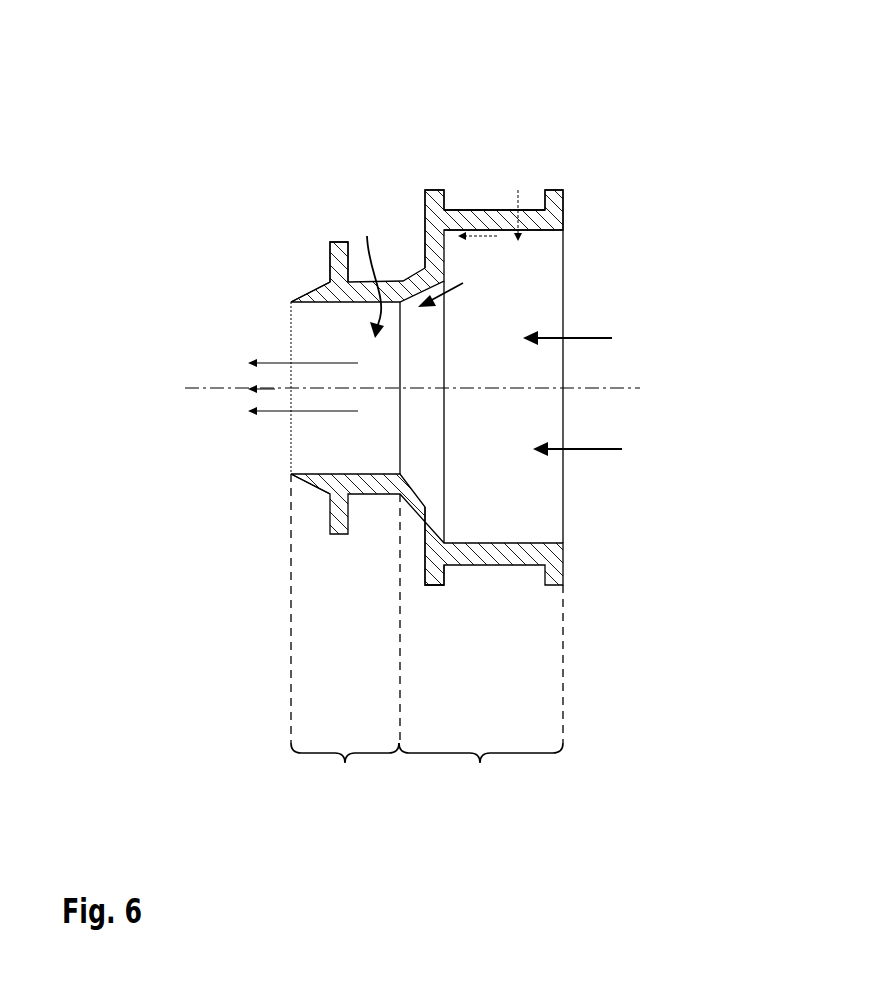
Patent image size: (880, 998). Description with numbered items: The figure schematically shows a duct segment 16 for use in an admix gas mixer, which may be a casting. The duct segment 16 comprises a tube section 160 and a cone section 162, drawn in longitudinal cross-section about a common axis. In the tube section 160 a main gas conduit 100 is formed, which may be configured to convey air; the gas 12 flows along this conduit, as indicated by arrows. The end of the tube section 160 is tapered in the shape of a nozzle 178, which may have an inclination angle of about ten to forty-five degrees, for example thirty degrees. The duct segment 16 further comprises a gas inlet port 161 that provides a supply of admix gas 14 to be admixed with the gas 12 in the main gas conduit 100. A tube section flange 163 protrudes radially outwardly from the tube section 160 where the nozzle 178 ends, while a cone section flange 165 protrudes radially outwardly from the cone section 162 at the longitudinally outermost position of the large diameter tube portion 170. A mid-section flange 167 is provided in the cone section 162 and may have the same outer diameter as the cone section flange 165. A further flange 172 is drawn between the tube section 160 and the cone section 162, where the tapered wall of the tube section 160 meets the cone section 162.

The gas 12 is at (585, 338).
The admix gas 14 is at (450, 290).
The duct segment 16 is at (296, 114).
The main gas conduit 100 is at (362, 271).
The tube section 160 is at (345, 777).
The gas inlet port 161 is at (513, 220).
The cone section 162 is at (481, 774).
The tube section flange 163 is at (345, 268).
The cone section flange 165 is at (560, 203).
The mid-section flange 167 is at (433, 586).
The large diameter tube portion 170 is at (458, 218).
The intermediate flange 172 is at (428, 252).
The nozzle 178 is at (313, 298).